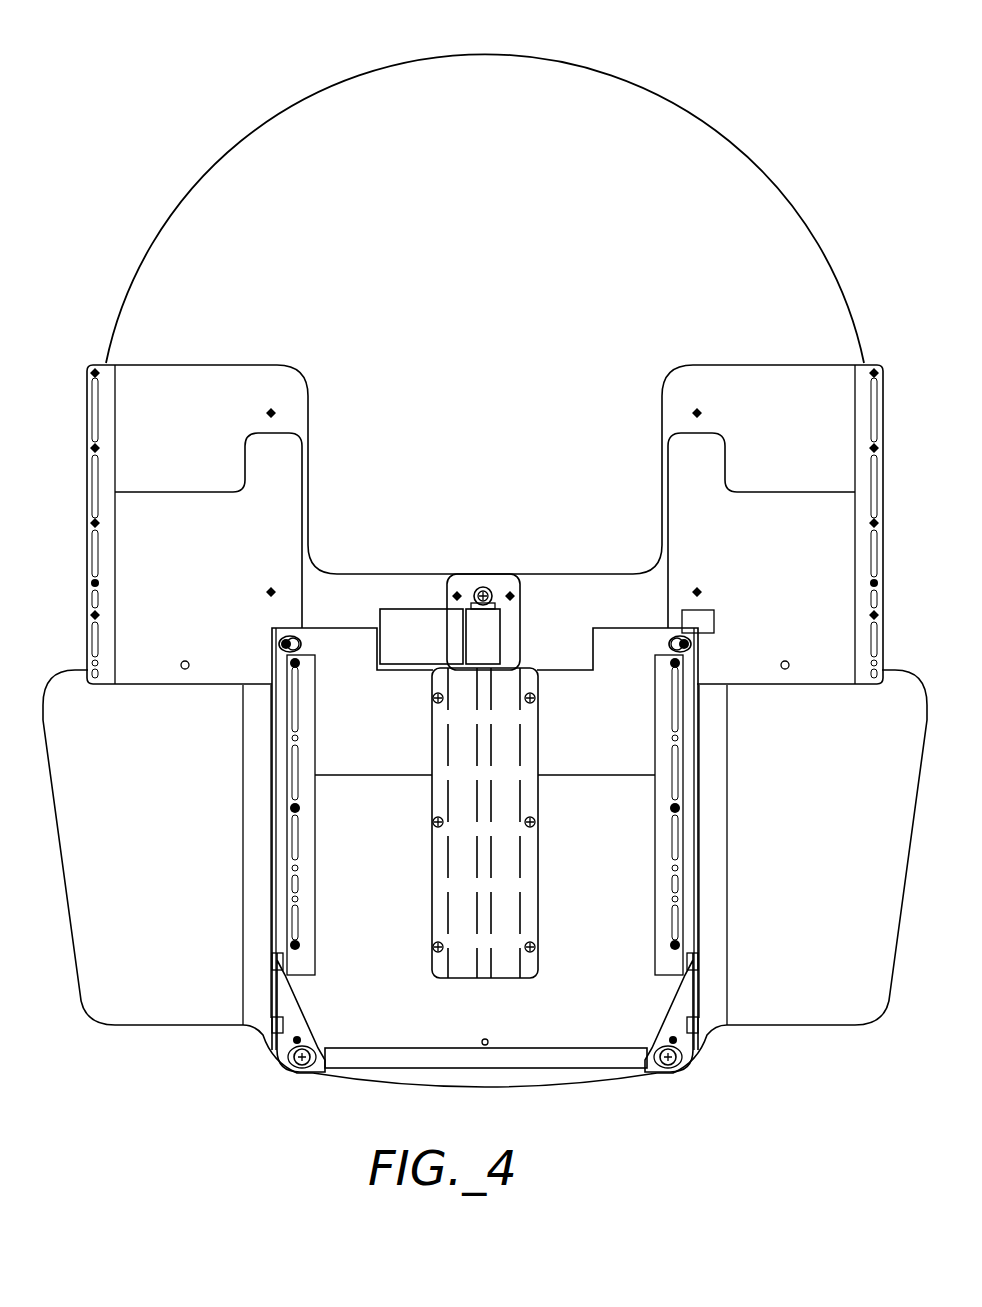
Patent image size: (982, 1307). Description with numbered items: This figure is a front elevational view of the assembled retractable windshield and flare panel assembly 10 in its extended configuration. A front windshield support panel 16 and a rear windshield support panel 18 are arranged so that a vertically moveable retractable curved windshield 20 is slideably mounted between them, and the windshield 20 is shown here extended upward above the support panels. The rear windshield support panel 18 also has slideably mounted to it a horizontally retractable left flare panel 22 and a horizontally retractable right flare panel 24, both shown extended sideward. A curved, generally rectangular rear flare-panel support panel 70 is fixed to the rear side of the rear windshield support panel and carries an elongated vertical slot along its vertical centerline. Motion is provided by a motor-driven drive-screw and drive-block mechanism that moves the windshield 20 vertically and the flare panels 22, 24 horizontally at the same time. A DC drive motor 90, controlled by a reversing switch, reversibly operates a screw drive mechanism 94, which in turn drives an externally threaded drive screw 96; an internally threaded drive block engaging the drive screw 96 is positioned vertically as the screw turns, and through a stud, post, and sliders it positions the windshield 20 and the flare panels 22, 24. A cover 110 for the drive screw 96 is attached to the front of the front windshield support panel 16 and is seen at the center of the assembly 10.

The retractable windshield and flare panel assembly 10 is at (742, 70).
The retractable curved windshield 20 is at (612, 93).
The front windshield support panel 16 is at (828, 417).
The rear windshield support panel 18 is at (828, 553).
The horizontally retractable left flare panel 22 is at (177, 1008).
The horizontally retractable right flare panel 24 is at (797, 1008).
The rear flare-panel support panel 70 is at (595, 1032).
The DC drive motor 90 is at (422, 622).
The screw drive mechanism 94 is at (483, 638).
The drive screw 96 is at (492, 745).
The cover 110 is at (504, 845).